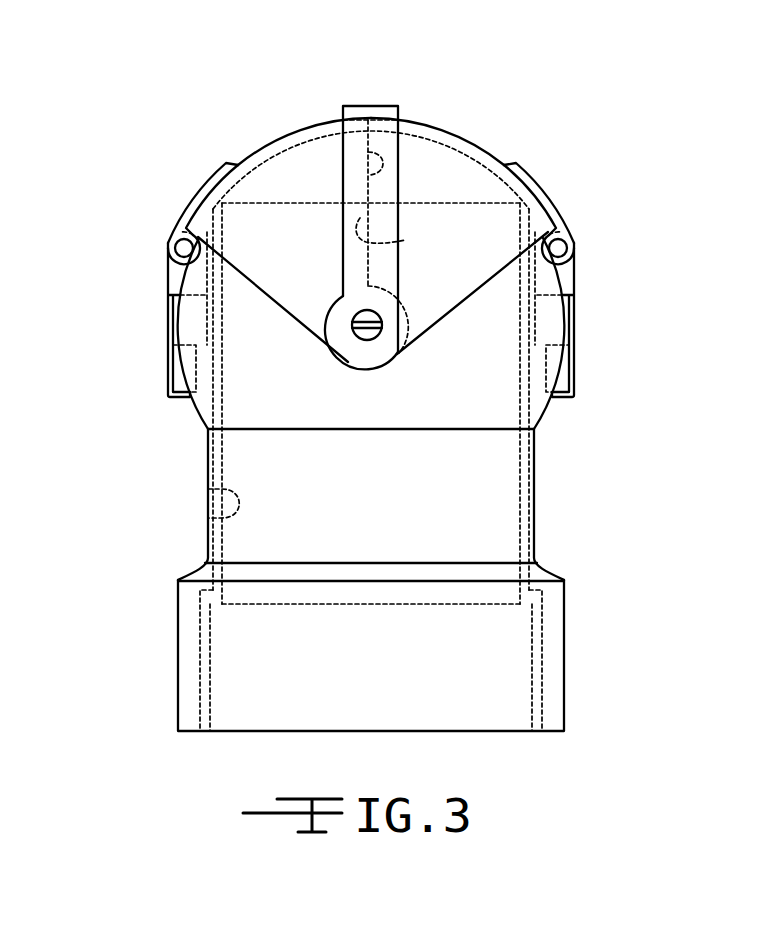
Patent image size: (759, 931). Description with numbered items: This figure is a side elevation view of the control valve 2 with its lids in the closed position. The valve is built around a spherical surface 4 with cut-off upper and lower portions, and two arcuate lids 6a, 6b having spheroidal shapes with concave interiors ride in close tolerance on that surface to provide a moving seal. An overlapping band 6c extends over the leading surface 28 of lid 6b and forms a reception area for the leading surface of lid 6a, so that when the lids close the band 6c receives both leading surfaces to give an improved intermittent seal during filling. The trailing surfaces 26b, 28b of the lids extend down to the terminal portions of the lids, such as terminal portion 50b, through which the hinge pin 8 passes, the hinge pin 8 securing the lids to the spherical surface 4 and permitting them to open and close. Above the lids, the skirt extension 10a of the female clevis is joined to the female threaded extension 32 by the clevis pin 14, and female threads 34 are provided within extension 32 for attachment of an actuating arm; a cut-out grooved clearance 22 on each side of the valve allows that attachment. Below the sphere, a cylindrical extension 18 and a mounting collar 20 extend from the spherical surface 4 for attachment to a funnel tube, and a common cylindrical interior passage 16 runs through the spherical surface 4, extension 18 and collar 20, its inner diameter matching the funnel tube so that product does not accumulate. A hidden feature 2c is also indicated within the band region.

The control valve 2 is at (522, 141).
The hidden passage in stem 2c is at (368, 175).
The spherical surface 4 is at (466, 373).
The arcuate lid 6a is at (296, 130).
The arcuate lid 6b is at (437, 127).
The overlapping band 6c is at (384, 105).
The hinge pin 8 is at (362, 336).
The skirt extension 10a is at (596, 178).
The clevis pin 14 is at (620, 233).
The cylindrical interior passage 16 is at (208, 490).
The cylindrical extension 18 is at (536, 529).
The mounting collar 20 is at (566, 656).
The cut-out grooved clearance 22 is at (531, 472).
The trailing sealing edge 26b is at (272, 300).
The leading surface 28 is at (406, 240).
The trailing sealing edge 28b is at (453, 309).
The female threaded extension 32 is at (626, 313).
The female threads 34 is at (178, 402).
The terminal portion 50b is at (327, 328).